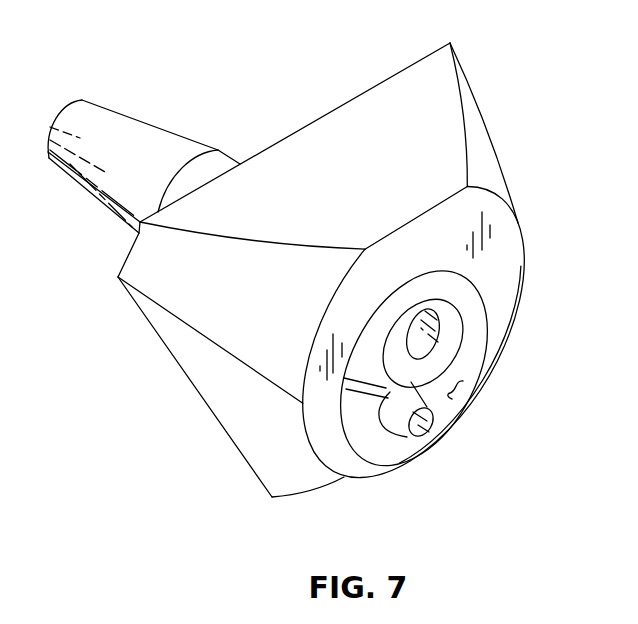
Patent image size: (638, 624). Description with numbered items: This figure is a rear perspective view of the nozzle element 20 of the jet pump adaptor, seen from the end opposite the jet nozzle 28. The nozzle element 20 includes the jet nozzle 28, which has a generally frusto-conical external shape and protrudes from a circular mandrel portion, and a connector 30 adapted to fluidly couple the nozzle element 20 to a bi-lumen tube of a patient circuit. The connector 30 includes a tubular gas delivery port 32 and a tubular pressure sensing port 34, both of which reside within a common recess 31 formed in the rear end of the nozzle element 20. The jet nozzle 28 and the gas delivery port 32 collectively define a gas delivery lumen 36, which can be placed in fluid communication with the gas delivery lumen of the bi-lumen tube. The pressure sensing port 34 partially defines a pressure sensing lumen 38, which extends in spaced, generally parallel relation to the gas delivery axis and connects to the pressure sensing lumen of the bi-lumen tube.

The nozzle element 20 is at (514, 66).
The jet nozzle 28 is at (77, 173).
The connector 30 is at (478, 289).
The recess 31 is at (461, 390).
The gas delivery port 32 is at (453, 328).
The pressure sensing port 34 is at (367, 412).
The gas delivery lumen 36 is at (425, 340).
The pressure sensing lumen 38 is at (428, 440).